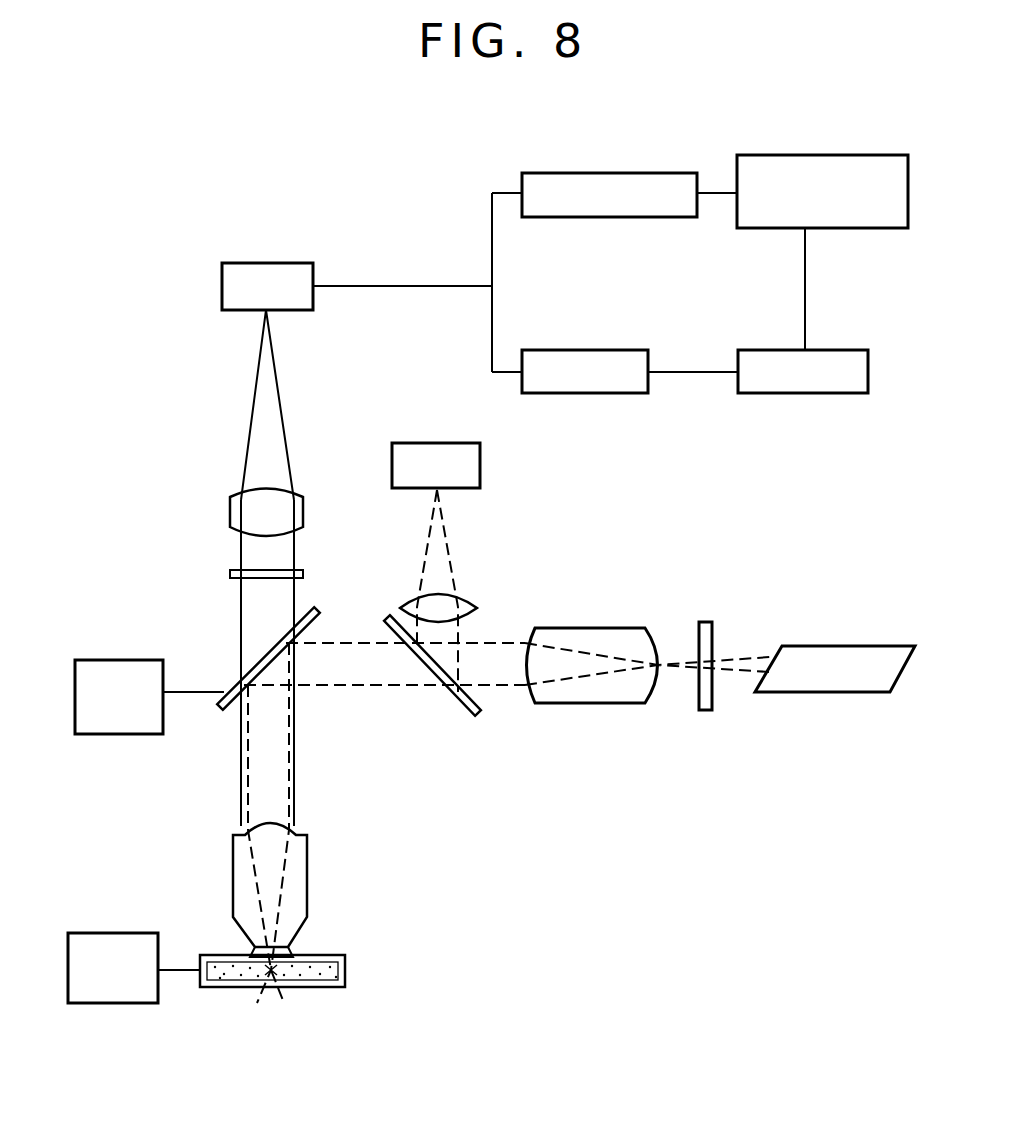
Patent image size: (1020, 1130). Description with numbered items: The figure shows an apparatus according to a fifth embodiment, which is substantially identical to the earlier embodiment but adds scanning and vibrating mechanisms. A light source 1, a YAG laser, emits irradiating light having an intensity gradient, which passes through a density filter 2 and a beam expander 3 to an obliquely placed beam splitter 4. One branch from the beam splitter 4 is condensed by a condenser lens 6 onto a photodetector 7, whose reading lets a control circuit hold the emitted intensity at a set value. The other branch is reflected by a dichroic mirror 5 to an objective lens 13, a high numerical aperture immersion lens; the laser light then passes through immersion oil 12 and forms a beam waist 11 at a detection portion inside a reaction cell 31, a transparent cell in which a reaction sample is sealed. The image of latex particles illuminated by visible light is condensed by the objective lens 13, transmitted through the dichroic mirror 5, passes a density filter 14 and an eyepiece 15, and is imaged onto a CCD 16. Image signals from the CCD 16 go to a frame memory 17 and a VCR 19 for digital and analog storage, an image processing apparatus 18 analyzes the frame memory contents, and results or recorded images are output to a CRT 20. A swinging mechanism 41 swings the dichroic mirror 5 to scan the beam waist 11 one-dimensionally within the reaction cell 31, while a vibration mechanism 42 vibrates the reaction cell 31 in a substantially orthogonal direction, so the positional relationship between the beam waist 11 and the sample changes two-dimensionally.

The light source 1 is at (840, 646).
The density filter 2 is at (708, 622).
The beam expander 3 is at (640, 628).
The beam splitter 4 is at (470, 713).
The dichroic mirror 5 is at (317, 612).
The condenser lens 6 is at (470, 605).
The photodetector 7 is at (480, 468).
The beam waist 11 is at (248, 987).
The immersion oil 12 is at (290, 953).
The objective lens 13 is at (308, 857).
The density filter 14 is at (303, 572).
The eyepiece 15 is at (303, 498).
The CCD 16 is at (313, 265).
The frame memory 17 is at (628, 173).
The image processing apparatus 18 is at (848, 155).
The VCR 19 is at (628, 350).
The CRT 20 is at (845, 350).
The reaction cell 31 is at (345, 972).
The swinging mechanism 41 is at (140, 660).
The vibration mechanism 42 is at (128, 933).